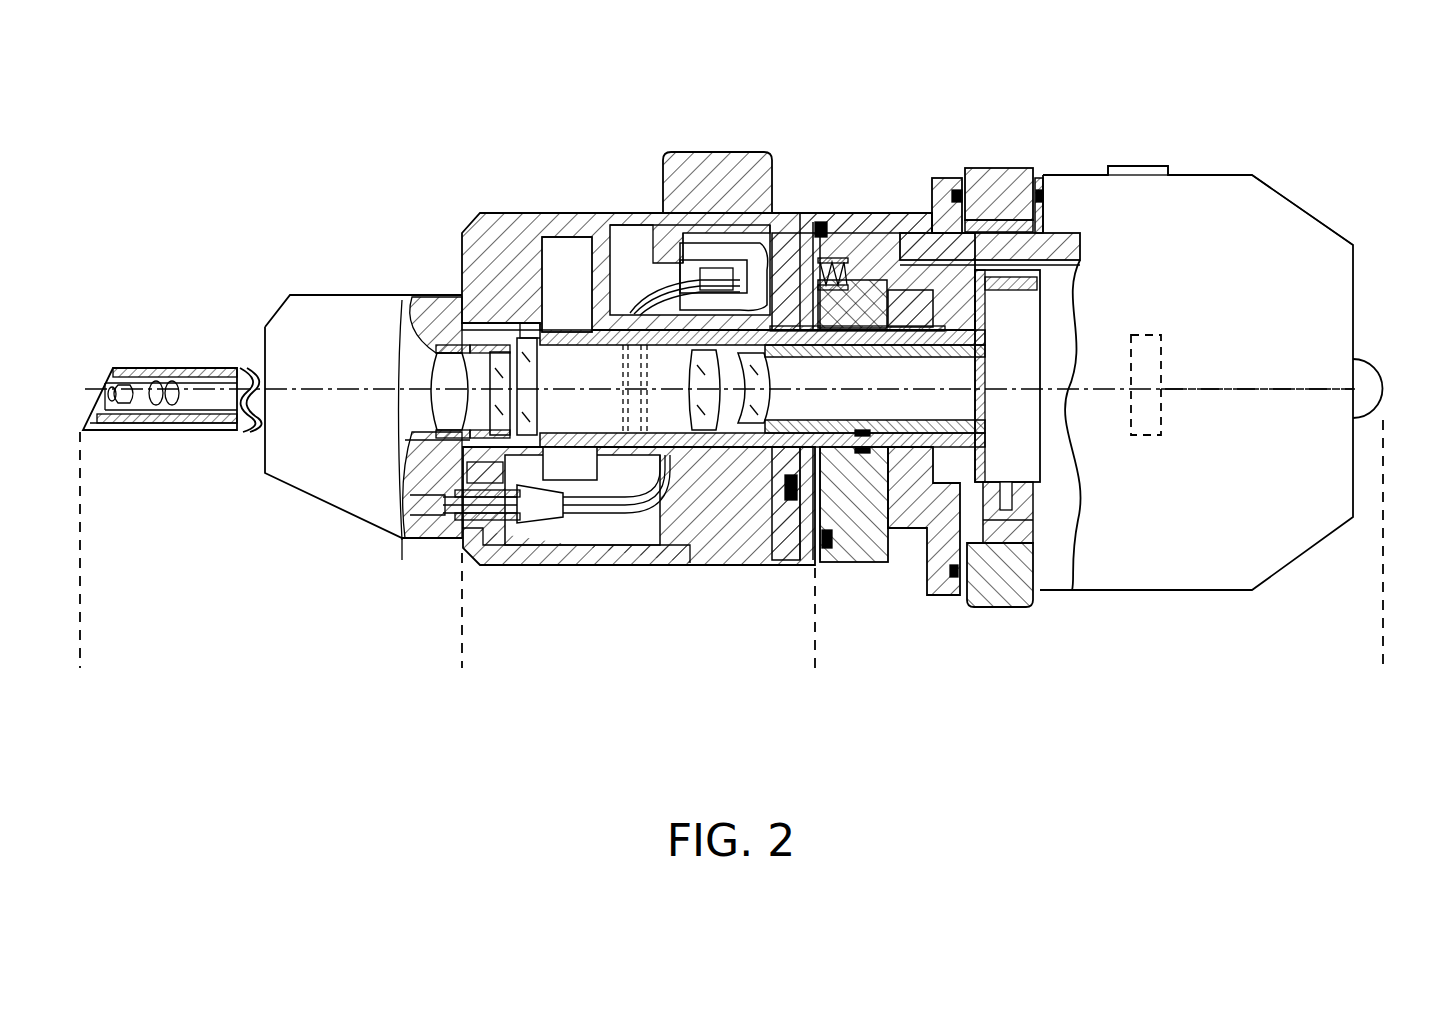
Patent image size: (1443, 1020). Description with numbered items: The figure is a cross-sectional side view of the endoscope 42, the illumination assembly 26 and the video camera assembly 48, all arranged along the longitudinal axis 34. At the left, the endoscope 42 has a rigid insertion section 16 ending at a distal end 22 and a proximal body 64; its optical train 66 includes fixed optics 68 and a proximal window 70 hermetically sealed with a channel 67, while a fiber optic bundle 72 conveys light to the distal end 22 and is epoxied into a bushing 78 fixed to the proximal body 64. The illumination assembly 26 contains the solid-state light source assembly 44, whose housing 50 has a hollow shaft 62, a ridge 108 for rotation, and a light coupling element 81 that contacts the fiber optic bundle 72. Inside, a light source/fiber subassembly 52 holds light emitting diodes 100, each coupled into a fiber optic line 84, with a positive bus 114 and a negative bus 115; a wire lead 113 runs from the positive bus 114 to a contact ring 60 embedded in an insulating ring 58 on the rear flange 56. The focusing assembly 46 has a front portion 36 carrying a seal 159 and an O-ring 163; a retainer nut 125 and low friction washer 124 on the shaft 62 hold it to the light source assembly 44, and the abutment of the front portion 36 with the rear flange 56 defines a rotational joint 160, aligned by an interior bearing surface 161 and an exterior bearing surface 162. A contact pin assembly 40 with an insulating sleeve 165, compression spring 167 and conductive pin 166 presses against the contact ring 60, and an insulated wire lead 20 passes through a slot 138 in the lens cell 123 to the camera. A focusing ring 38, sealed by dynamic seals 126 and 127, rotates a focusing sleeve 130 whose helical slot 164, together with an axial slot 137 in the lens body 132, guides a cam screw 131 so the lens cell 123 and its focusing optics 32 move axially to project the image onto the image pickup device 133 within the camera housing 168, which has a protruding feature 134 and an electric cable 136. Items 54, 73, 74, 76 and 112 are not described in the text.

The rigid insertion section 16 is at (160, 370).
The insulated wire lead 20 is at (895, 262).
The distal end 22 is at (108, 372).
The illumination assembly 26 is at (462, 735).
The focusing optics 32 is at (700, 480).
The longitudinal axis 34 is at (1215, 386).
The front portion 36 is at (876, 565).
The focusing ring 38 is at (997, 167).
The contact pin assembly 40 is at (880, 275).
The endoscope 42 is at (462, 660).
The solid-state light source assembly 44 is at (815, 660).
The focusing assembly 46 is at (815, 660).
The video camera assembly 48 is at (1040, 660).
The housing 50 is at (508, 565).
The light source/fiber optic subassembly 52 is at (592, 260).
The wall 54 is at (520, 330).
The rear flange 56 is at (790, 560).
The insulating ring 58 is at (778, 540).
The contact ring 60 is at (792, 500).
The hollow shaft 62 is at (560, 336).
The proximal body 64 is at (300, 296).
The optical train 66 is at (176, 410).
The channel 67 is at (412, 380).
The fixed optics 68 is at (430, 417).
The proximal window 70 is at (425, 432).
The fiber optic bundle 72 is at (152, 420).
The housing portion 73 is at (432, 542).
The window 74 is at (500, 350).
The fiber guide 76 is at (478, 535).
The bushing 78 is at (490, 525).
The light coupling element 81 is at (538, 530).
The fiber optic line 84 is at (640, 310).
The light emitting diodes 100 is at (660, 232).
The ridge 108 is at (730, 225).
The sub-housing 112 is at (778, 305).
The wire lead 113 is at (748, 285).
The positive bus 114 is at (735, 295).
The negative bus 115 is at (715, 245).
The lens cell 123 is at (1000, 305).
The washer 124 is at (915, 500).
The retainer nut 125 is at (938, 560).
The dynamic seal 126 is at (948, 177).
The dynamic seal 127 is at (1043, 177).
The focusing sleeve 130 is at (1000, 590).
The cam screw 131 is at (1035, 518).
The lens body 132 is at (1068, 598).
The image pickup device 133 is at (1155, 336).
The protruding feature 134 is at (1150, 165).
The electric cable 136 is at (1372, 365).
The axial slot 137 is at (1040, 495).
The slot 138 is at (1040, 245).
The seal 159 is at (832, 540).
The rotational joint 160 is at (818, 280).
The interior bearing surface 161 is at (873, 350).
The exterior bearing surface 162 is at (933, 312).
The O-ring 163 is at (862, 431).
The helical through slot 164 is at (1038, 530).
The sleeve 165 is at (845, 275).
The conductive pin 166 is at (790, 345).
The compression spring 167 is at (840, 335).
The housing 168 is at (1295, 210).